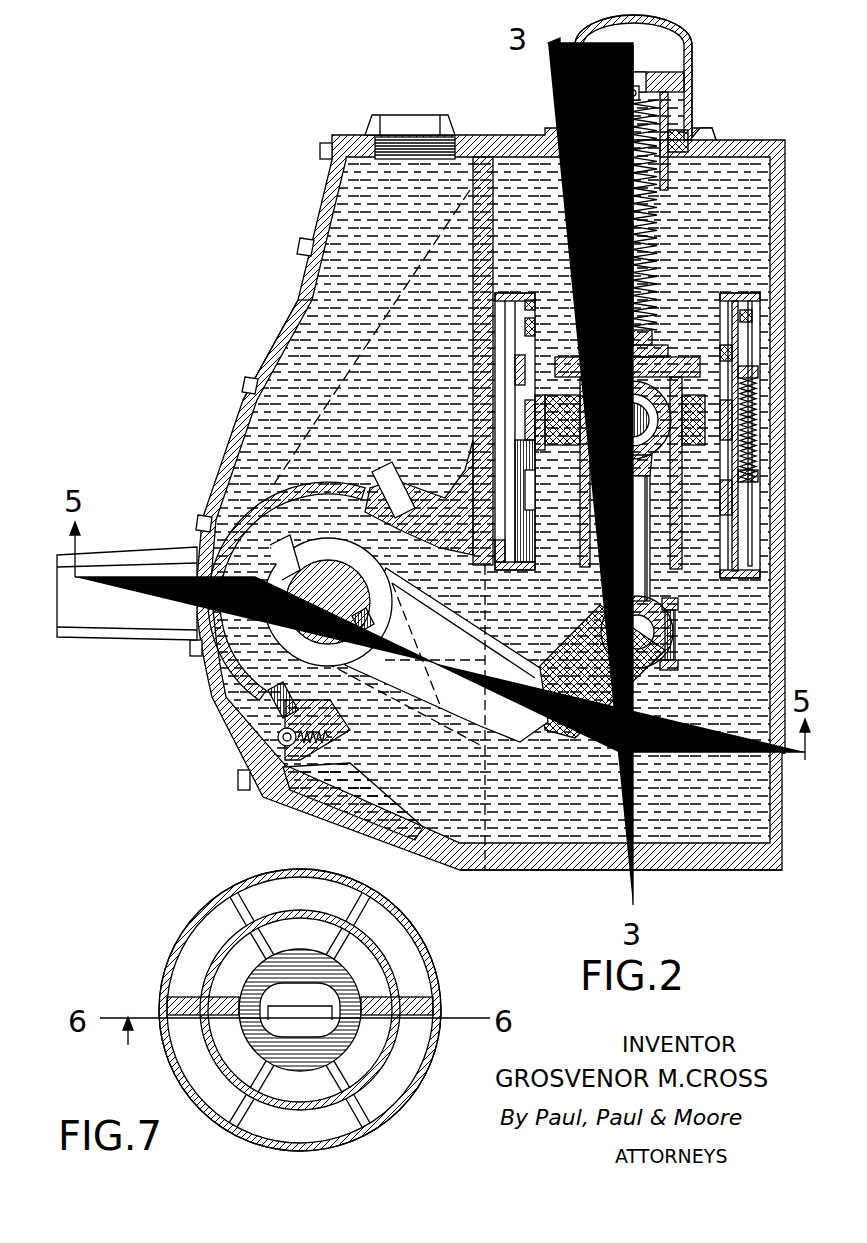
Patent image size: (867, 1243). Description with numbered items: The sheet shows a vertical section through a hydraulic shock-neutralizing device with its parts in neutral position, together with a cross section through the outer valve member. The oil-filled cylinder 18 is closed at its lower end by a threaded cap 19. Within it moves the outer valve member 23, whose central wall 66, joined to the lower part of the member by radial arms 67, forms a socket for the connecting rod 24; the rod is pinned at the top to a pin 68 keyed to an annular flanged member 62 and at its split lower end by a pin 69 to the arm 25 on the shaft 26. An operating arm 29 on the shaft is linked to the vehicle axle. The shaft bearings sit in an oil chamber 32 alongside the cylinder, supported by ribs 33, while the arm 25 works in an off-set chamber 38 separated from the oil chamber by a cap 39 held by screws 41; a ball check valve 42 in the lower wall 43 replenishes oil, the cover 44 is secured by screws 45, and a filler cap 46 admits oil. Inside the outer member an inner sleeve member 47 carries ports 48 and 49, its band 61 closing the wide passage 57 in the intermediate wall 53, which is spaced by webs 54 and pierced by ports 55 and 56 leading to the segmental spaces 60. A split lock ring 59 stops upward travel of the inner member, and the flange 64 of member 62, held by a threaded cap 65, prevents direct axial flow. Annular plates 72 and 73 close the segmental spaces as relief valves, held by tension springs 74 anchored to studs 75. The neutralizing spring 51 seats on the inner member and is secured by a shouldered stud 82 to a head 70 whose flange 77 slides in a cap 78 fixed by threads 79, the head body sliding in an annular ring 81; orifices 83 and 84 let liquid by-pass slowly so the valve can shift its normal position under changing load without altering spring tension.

In FIG. 2, the cylinder 18 is at (773, 172).
In FIG. 2, the closure or cap 19 is at (708, 862).
In FIG. 2, the outer valve member 23 is at (788, 300).
In FIG. 7, the outer valve member 23 is at (195, 920).
In FIG. 2, the connecting rod 24 is at (632, 491).
In FIG. 2, the arm 25 is at (520, 740).
In FIG. 2, the shaft 26 is at (300, 615).
In FIG. 2, the operating arm 29 is at (120, 610).
In FIG. 2, the oil chamber 32 is at (290, 310).
In FIG. 2, the flanges or ribs 33 is at (410, 280).
In FIG. 2, the off-set chamber 38 is at (462, 782).
In FIG. 2, the cap 39 is at (240, 520).
In FIG. 2, the screws 41 is at (380, 478).
In FIG. 2, the ball check valve 42 is at (278, 740).
In FIG. 2, the lower wall 43 is at (380, 778).
In FIG. 2, the wall or cover 44 is at (232, 412).
In FIG. 2, the screws 45 is at (320, 150).
In FIG. 2, the filler cap 46 is at (400, 120).
In FIG. 2, the inner sleeve member 47 is at (690, 520).
In FIG. 2, the ports 48 is at (550, 395).
In FIG. 2, the ports 49 is at (536, 448).
In FIG. 2, the neutralizing spring 51 is at (653, 223).
In FIG. 2, the intermediate wall 53 is at (788, 553).
In FIG. 7, the intermediate wall 53 is at (215, 962).
In FIG. 2, the ribs or webs 54 is at (511, 549).
In FIG. 7, the ribs or webs 54 is at (232, 900).
In FIG. 2, the ports 55 is at (525, 330).
In FIG. 2, the ports 56 is at (788, 520).
In FIG. 7, the ports 56 is at (385, 962).
In FIG. 2, the opening or passage 57 is at (788, 410).
In FIG. 2, the split lock ring 59 is at (535, 305).
In FIG. 2, the segmental spaces 60 is at (738, 335).
In FIG. 7, the segmental spaces 60 is at (282, 888).
In FIG. 2, the band or zone 61 is at (518, 375).
In FIG. 2, the annular ring or member 62 is at (752, 450).
In FIG. 2, the flange 64 is at (758, 474).
In FIG. 2, the threaded cap 65 is at (600, 362).
In FIG. 2, the central wall 66 is at (748, 465).
In FIG. 7, the central wall 66 is at (298, 980).
In FIG. 2, the radial arms or webs 67 is at (539, 501).
In FIG. 7, the radial arms or webs 67 is at (330, 1062).
In FIG. 2, the pin 68 is at (637, 413).
In FIG. 2, the pin 69 is at (650, 660).
In FIG. 2, the head 70 is at (688, 140).
In FIG. 2, the annular plate 72 is at (508, 292).
In FIG. 2, the annular plate 73 is at (512, 572).
In FIG. 2, the tension springs 74 is at (756, 392).
In FIG. 2, the studs 75 is at (752, 312).
In FIG. 2, the annular flange 77 is at (684, 82).
In FIG. 2, the cap 78 is at (692, 47).
In FIG. 2, the threads 79 is at (716, 138).
In FIG. 2, the annular ring 81 is at (598, 140).
In FIG. 2, the shouldered stud 82 is at (640, 88).
In FIG. 2, the orifice 83 is at (590, 78).
In FIG. 2, the orifice 84 is at (612, 75).